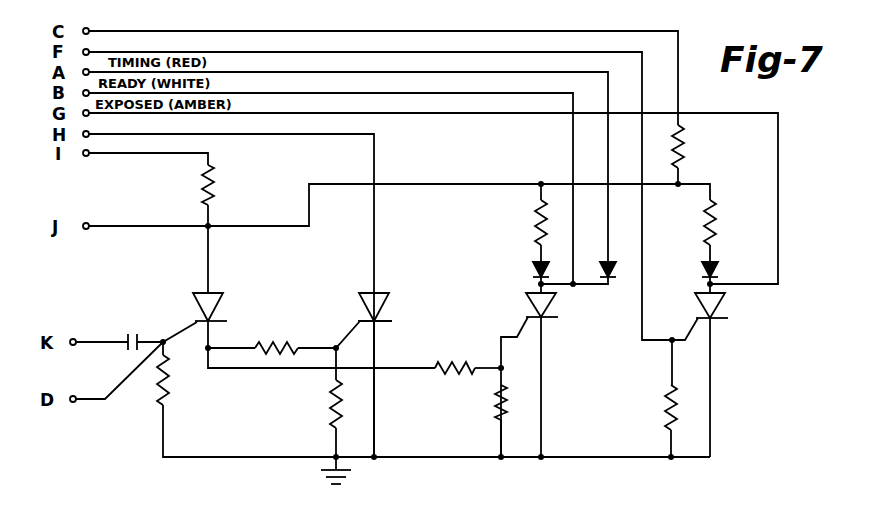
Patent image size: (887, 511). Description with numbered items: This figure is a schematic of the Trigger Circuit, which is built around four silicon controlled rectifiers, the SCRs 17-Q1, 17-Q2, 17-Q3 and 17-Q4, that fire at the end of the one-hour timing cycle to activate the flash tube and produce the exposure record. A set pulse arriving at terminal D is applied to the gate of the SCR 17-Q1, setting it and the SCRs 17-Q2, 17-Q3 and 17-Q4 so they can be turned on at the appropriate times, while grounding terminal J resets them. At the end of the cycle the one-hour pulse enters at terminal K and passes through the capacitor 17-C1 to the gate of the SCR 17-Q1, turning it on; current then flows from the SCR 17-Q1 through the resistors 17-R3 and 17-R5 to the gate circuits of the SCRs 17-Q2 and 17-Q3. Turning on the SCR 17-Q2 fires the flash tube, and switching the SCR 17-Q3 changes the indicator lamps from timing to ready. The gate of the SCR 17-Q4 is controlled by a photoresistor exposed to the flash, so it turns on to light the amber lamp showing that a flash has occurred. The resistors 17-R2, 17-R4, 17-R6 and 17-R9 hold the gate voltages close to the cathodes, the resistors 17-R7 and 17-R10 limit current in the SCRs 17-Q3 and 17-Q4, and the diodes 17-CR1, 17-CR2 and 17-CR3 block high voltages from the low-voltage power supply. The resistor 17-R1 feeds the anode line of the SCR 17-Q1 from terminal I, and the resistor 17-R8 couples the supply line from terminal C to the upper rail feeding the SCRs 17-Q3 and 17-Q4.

The resistor 17-R1 is at (198, 184).
The resistor 17-R2 is at (159, 381).
The resistor 17-R3 is at (274, 348).
The resistor 17-R4 is at (327, 404).
The resistor 17-R5 is at (452, 371).
The resistor 17-R6 is at (497, 402).
The resistor 17-R7 is at (535, 222).
The resistor 17-R8 is at (680, 146).
The resistor 17-R9 is at (661, 407).
The resistor 17-R10 is at (706, 222).
The capacitor 17-C1 is at (113, 355).
The SCR 17-Q1 is at (213, 298).
The SCR 17-Q2 is at (369, 302).
The SCR 17-Q3 is at (530, 321).
The SCR 17-Q4 is at (706, 317).
The diode 17-CR1 is at (509, 266).
The diode 17-CR2 is at (618, 248).
The diode 17-CR3 is at (724, 259).